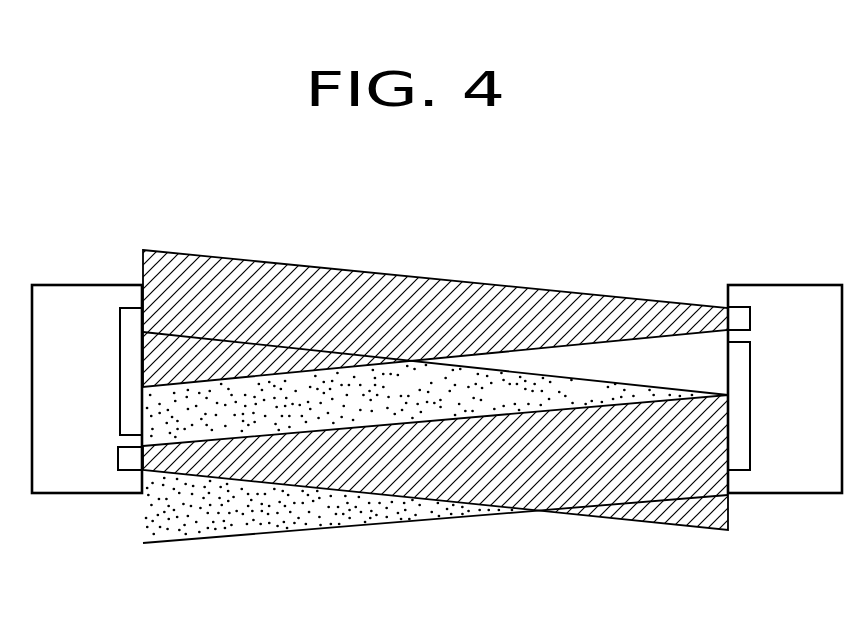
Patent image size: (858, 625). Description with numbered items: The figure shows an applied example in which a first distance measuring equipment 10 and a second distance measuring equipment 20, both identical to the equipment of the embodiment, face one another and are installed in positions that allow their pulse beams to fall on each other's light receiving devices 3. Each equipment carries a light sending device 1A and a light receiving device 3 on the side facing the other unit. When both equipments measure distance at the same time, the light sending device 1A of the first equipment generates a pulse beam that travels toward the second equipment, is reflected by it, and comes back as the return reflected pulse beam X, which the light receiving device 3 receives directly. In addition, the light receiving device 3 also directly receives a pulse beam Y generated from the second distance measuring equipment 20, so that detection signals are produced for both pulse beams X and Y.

The first distance measuring equipment 10 is at (45, 494).
The second distance measuring equipment 20 is at (790, 285).
The light receiving device 3 is at (135, 308).
The light sending device 1A is at (128, 472).
The pulse beam Y is at (262, 275).
The return reflected pulse beam X is at (244, 510).